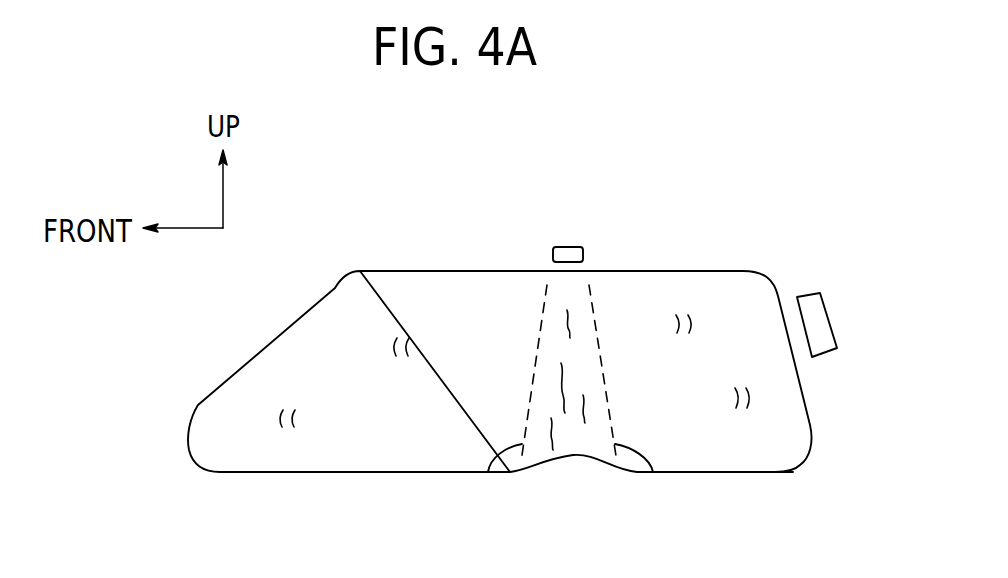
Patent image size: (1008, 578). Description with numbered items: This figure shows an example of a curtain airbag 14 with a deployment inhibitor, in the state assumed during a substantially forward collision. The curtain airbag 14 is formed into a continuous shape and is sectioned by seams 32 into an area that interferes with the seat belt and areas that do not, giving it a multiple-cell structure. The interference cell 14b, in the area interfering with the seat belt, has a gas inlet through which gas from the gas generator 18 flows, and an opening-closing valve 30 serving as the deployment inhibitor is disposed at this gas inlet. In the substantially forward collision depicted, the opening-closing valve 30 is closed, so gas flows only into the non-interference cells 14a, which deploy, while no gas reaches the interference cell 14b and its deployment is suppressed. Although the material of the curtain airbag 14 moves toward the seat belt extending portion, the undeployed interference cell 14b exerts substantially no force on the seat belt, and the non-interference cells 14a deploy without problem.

The curtain airbag 14 is at (737, 247).
The non-interference cells 14a is at (337, 467).
The interference cell 14b is at (567, 457).
The gas generator 18 is at (825, 310).
The opening-closing valve 30 is at (570, 247).
The seams 32 is at (488, 472).